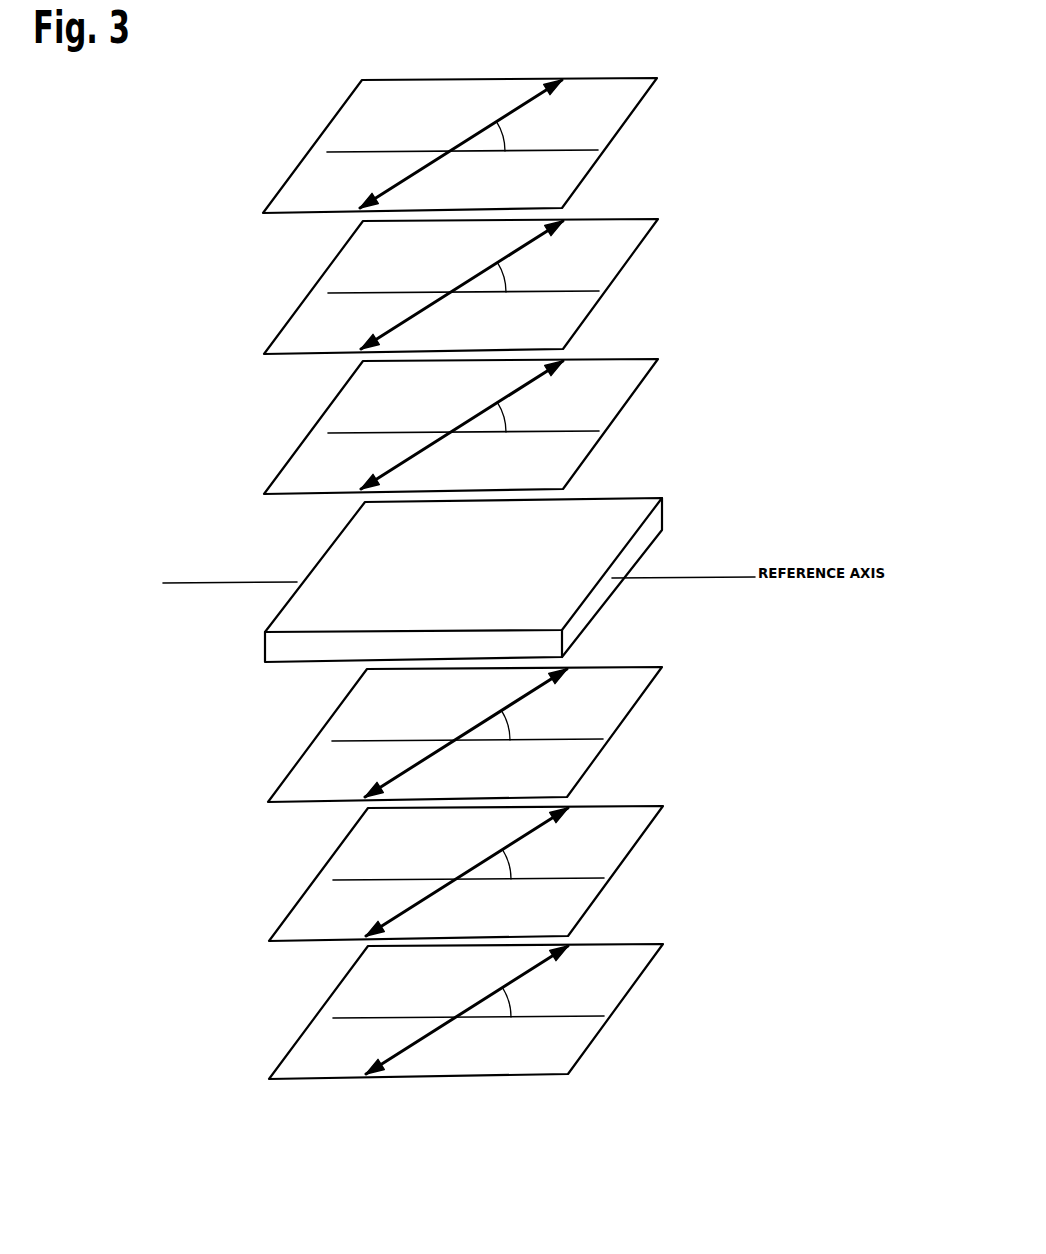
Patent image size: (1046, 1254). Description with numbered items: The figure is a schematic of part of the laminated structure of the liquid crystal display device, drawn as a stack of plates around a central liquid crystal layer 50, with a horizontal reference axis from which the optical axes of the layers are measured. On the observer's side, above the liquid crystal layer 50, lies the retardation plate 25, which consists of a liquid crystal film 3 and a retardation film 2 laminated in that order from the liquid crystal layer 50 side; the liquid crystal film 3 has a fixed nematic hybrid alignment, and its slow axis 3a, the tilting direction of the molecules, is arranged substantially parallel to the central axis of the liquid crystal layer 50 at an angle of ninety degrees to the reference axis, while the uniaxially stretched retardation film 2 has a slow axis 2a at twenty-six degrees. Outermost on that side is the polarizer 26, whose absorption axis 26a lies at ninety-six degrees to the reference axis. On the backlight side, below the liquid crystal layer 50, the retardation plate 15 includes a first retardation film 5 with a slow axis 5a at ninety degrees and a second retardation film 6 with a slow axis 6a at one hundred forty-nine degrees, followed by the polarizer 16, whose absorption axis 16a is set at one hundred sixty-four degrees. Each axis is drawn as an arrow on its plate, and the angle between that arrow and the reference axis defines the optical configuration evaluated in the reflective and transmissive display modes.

The polarizer 26 is at (447, 145).
The absorption axis 26a is at (492, 144).
The retardation plate 25 is at (411, 356).
The retardation film 2 is at (455, 286).
The slow axis 2a is at (485, 285).
The liquid crystal film 3 is at (455, 426).
The slow axis 3a is at (485, 425).
The liquid crystal layer 50 is at (350, 550).
The retardation plate 15 is at (415, 804).
The first retardation film 5 is at (459, 734).
The slow axis 5a is at (489, 733).
The second retardation film 6 is at (460, 873).
The slow axis 6a is at (490, 872).
The polarizer 16 is at (453, 1011).
The absorption axis 16a is at (498, 1010).